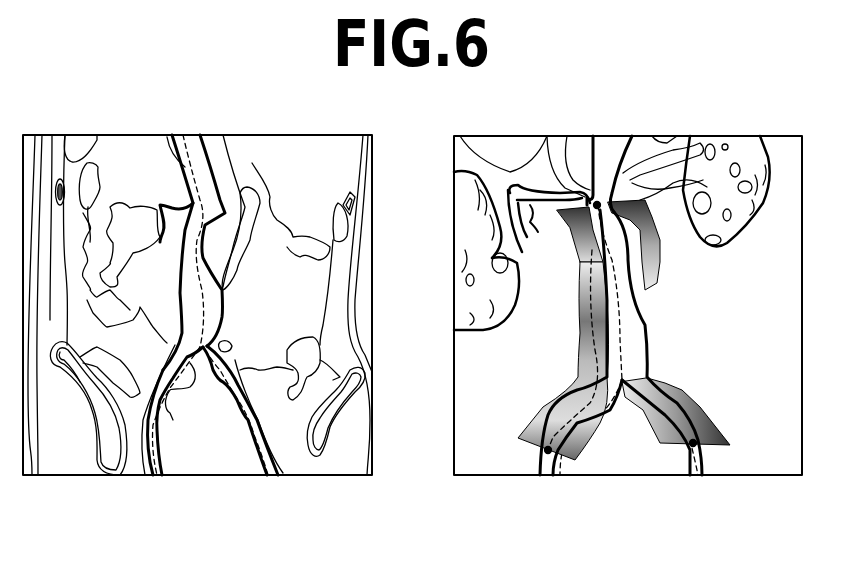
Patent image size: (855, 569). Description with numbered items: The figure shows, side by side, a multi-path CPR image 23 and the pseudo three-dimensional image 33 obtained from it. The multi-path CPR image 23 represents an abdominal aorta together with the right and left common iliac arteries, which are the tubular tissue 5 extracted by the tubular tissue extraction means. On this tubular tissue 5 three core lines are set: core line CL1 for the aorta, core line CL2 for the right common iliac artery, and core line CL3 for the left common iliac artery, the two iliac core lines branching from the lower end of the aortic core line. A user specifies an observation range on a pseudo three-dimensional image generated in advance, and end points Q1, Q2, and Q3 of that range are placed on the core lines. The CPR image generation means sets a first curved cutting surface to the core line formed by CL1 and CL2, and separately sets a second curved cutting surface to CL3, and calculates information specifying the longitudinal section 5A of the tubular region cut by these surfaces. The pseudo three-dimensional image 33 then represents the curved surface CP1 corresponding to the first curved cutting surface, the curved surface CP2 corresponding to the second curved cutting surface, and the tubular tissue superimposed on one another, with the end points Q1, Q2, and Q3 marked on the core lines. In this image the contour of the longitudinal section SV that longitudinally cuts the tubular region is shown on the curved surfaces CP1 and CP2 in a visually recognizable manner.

The tubular tissue 5 is at (183, 165).
The longitudinal section of the tubular region 5A is at (147, 433).
The multi-path CPR image 23 is at (314, 134).
The pseudo three-dimensional image 33 is at (740, 135).
The core line of the aorta CL1 is at (178, 134).
The core line of the right common iliac artery CL2 is at (163, 452).
The core line of the left common iliac artery CL3 is at (280, 463).
The curved surface corresponding to the first curved cutting surface CP1 is at (590, 232).
The curved surface corresponding to the second curved cutting surface CP2 is at (678, 397).
The longitudinal section SV is at (578, 333).
The end point of the observation range Q1 is at (601, 205).
The end point of the observation range Q2 is at (548, 450).
The end point of the observation range Q3 is at (693, 443).